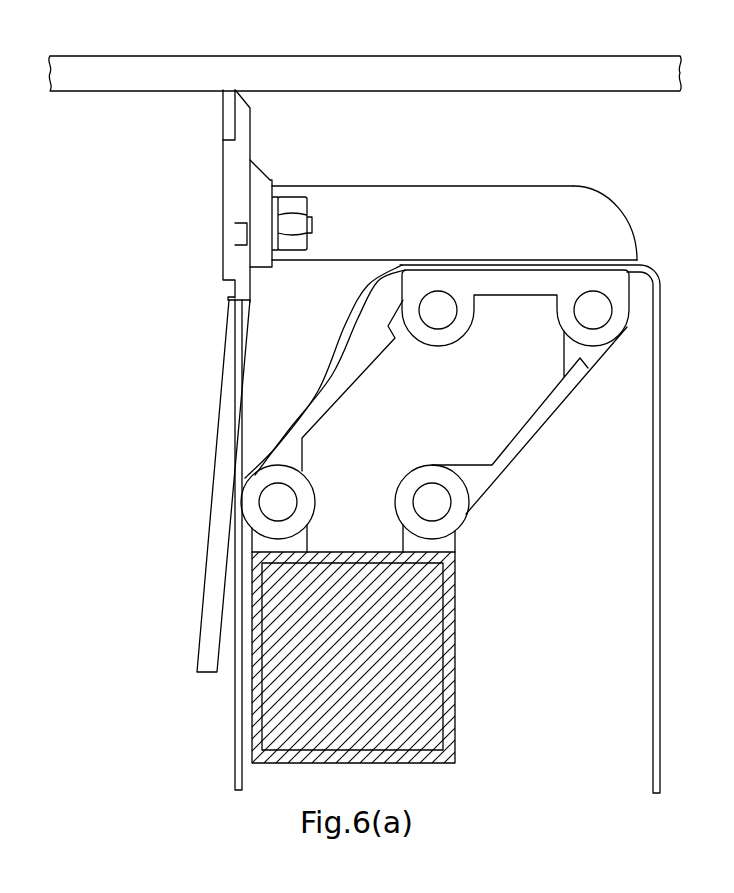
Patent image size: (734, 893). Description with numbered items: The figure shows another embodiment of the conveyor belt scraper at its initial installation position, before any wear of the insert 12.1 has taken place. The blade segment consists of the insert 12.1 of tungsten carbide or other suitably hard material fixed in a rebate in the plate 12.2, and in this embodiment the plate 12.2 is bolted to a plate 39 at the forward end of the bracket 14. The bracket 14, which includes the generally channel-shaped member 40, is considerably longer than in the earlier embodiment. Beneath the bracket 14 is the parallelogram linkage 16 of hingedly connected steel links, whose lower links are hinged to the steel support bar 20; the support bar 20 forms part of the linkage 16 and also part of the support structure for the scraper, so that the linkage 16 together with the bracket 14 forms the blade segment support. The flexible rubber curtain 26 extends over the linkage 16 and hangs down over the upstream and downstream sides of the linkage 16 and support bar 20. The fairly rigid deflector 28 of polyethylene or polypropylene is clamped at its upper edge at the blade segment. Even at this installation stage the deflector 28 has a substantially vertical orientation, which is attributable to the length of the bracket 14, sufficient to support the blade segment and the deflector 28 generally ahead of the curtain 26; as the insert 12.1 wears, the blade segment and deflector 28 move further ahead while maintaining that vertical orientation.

The insert 12.1 is at (232, 119).
The plate 12.2 is at (232, 182).
The blade segment support bracket 14 is at (454, 180).
The parallelogram linkage 16 is at (521, 481).
The support bar 20 is at (455, 683).
The flexible curtain 26 is at (660, 608).
The deflector 28 is at (197, 647).
The plate 39 is at (253, 182).
The channel-shaped member 40 is at (538, 208).